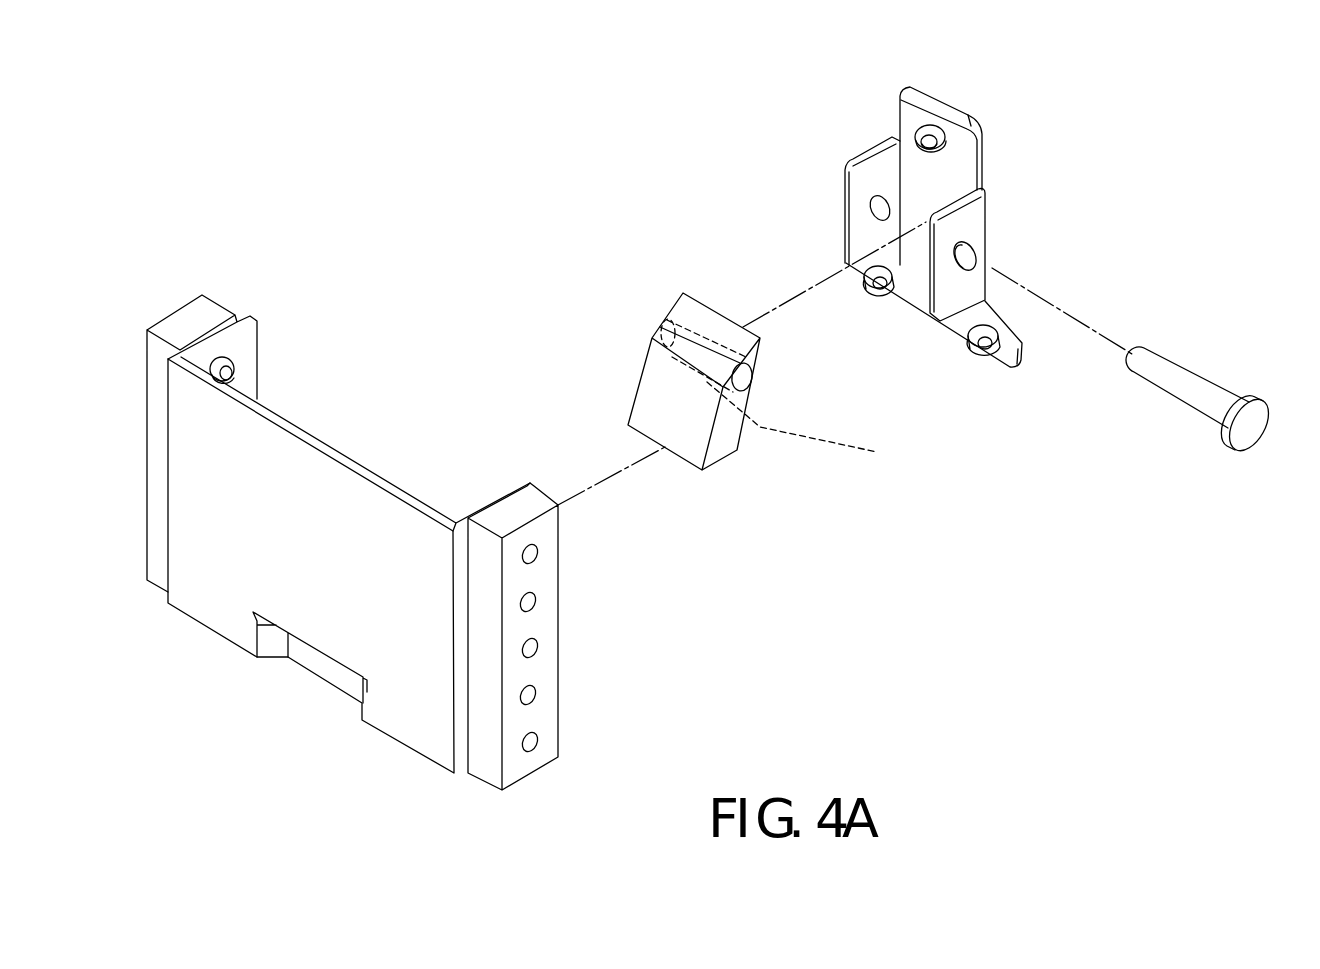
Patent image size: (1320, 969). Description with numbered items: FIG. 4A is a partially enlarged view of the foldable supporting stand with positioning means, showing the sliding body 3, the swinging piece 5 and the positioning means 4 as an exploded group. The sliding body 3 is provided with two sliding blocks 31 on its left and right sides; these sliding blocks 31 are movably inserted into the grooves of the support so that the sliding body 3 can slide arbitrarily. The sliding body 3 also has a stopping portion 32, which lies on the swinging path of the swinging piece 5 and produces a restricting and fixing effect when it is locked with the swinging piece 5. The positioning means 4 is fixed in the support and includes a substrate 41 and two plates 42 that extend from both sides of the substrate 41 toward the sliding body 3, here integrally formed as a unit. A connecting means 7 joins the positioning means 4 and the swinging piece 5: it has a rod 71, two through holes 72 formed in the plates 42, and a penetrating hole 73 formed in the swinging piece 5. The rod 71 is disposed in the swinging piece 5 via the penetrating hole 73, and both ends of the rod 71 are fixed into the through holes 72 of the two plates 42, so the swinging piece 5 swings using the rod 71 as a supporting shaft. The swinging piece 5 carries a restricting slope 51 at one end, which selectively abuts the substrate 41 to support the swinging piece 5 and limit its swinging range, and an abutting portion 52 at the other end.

The sliding body 3 is at (419, 488).
The sliding block 31 is at (183, 307).
The stopping portion 32 is at (315, 660).
The positioning means 4 is at (964, 190).
The substrate 41 is at (983, 157).
The plate 42 is at (975, 218).
The swinging piece 5 is at (737, 364).
The restricting slope 51 is at (762, 356).
The abutting portion 52 is at (722, 443).
The connecting means 7 is at (992, 394).
The rod 71 is at (1152, 368).
The through hole 72 is at (965, 264).
The penetrating hole 73 is at (805, 426).